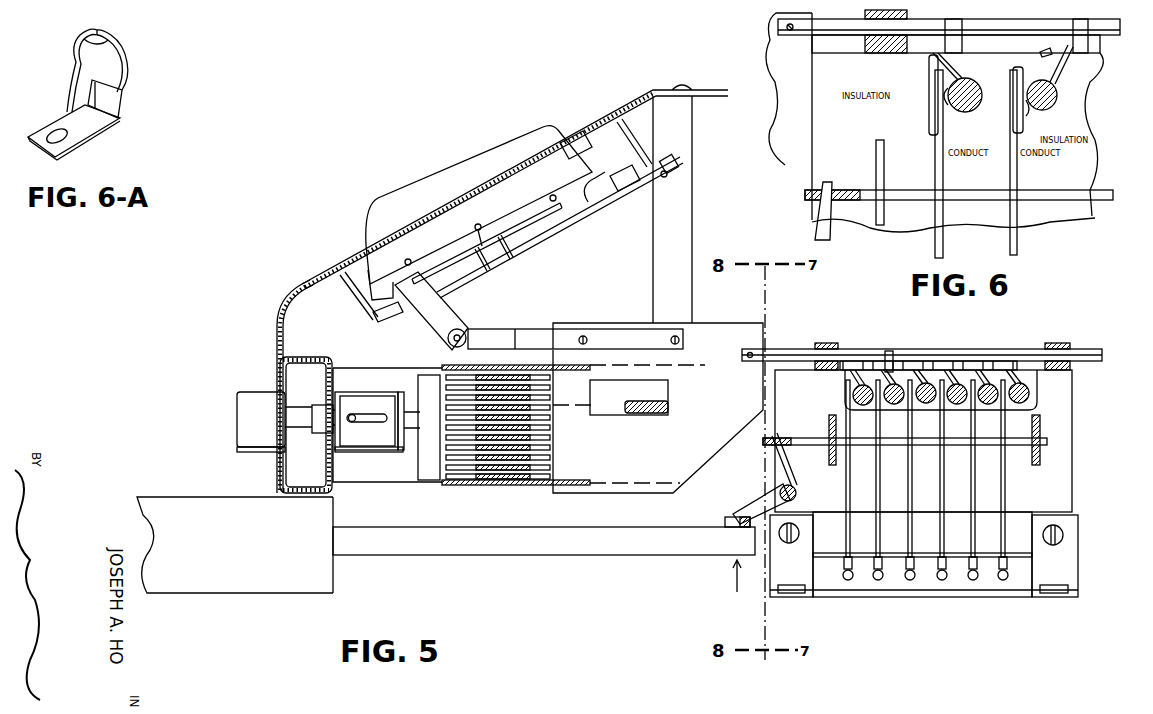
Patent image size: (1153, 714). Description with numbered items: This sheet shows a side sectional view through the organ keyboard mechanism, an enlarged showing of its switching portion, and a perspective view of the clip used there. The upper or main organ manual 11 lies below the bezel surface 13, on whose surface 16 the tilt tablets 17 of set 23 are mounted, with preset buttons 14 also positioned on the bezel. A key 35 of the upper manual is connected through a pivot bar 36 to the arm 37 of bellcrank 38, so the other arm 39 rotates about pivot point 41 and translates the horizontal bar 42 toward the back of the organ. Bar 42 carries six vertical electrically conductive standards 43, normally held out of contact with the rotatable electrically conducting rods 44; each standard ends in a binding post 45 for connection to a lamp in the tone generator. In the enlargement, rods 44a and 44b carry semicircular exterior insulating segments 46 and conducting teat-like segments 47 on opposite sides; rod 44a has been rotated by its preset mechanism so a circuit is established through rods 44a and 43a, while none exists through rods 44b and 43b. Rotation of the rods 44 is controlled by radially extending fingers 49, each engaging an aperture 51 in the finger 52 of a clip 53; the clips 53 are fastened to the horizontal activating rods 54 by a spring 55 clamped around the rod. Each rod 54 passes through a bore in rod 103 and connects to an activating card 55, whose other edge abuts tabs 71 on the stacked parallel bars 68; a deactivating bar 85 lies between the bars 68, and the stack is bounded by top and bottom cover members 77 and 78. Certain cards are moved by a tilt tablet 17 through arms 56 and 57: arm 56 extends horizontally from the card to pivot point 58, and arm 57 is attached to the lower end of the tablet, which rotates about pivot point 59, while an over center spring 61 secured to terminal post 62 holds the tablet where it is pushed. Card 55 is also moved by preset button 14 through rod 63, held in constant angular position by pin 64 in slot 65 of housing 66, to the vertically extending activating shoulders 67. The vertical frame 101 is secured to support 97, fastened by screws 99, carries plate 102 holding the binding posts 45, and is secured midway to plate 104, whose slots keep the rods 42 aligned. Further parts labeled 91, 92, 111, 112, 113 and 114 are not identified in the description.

In FIG. 5, the upper organ manual 11 is at (152, 497).
In FIG. 5, the bezel surface 13 is at (276, 340).
In FIG. 5, the preset push button 14 is at (243, 405).
In FIG. 5, the surface 16 is at (348, 262).
In FIG. 5, the tilt tablet 17 is at (432, 192).
In FIG. 5, the tilt tablet set 23 is at (430, 150).
In FIG. 5, the key 35 is at (207, 515).
In FIG. 5, the pivot bar 36 is at (640, 548).
In FIG. 5, the bellcrank arm 37 is at (747, 514).
In FIG. 5, the bellcrank 38 is at (772, 490).
In FIG. 6, the bellcrank arm 39 is at (826, 190).
In FIG. 5, the bellcrank arm 39 is at (779, 442).
In FIG. 5, the pivot point 41 is at (797, 492).
In FIG. 5, the horizontal bar 42 is at (1040, 445).
In FIG. 5, the electrically conducting standard 43 is at (910, 482).
In FIG. 6, the standard 43a is at (1016, 170).
In FIG. 6, the standard 43b is at (936, 170).
In FIG. 5, the electrically conducting rod 44 is at (853, 396).
In FIG. 6, the electrically conducting rod 44a is at (1045, 105).
In FIG. 6, the electrically conducting rod 44b is at (948, 97).
In FIG. 5, the binding post 45 is at (878, 582).
In FIG. 6, the insulating segment 46 is at (960, 85).
In FIG. 6, the conducting teat-like segment 47 is at (988, 90).
In FIG. 6, the radially extending finger 49 is at (1060, 70).
In FIG. 5, the radially extending finger 49 is at (1025, 367).
In FIG. 6A, the aperture 51 is at (56, 128).
In FIG. 6, the aperture 51 is at (1048, 52).
In FIG. 6A, the clip finger 52 is at (80, 140).
In FIG. 6, the clip finger 52 is at (1100, 70).
In FIG. 6A, the clip 53 is at (122, 108).
In FIG. 6, the clip 53 is at (965, 45).
In FIG. 6, the activating rod 54 is at (1112, 35).
In FIG. 5, the activating rod 54 is at (938, 350).
In FIG. 6A, the activating card 55 is at (62, 52).
In FIG. 6, the activating card 55 is at (783, 112).
In FIG. 5, the activating card 55 is at (762, 327).
In FIG. 5, the arm 56 is at (528, 329).
In FIG. 5, the arm 57 is at (432, 342).
In FIG. 5, the pivot pin 58 is at (459, 329).
In FIG. 5, the pivot point 59 is at (479, 224).
In FIG. 5, the over center spring 61 is at (597, 210).
In FIG. 5, the terminal post 62 is at (634, 188).
In FIG. 5, the rod 63 is at (300, 413).
In FIG. 5, the pin 64 is at (355, 414).
In FIG. 5, the slot 65 is at (383, 426).
In FIG. 5, the housing 66 is at (352, 450).
In FIG. 5, the activating shoulder 67 is at (428, 480).
In FIG. 5, the activating bar 68 is at (470, 481).
In FIG. 5, the tab 71 is at (538, 481).
In FIG. 5, the top cover member 77 is at (478, 365).
In FIG. 5, the bottom cover member 78 is at (500, 485).
In FIG. 5, the deactivating bar 85 is at (553, 407).
In FIG. 5, the contact element 91 is at (668, 410).
In FIG. 5, the switch block 92 is at (668, 384).
In FIG. 5, the support 97 is at (1076, 565).
In FIG. 5, the screw 99 is at (1079, 590).
In FIG. 5, the frame 101 is at (1072, 462).
In FIG. 5, the plate 102 is at (830, 558).
In FIG. 6, the rod 103 is at (862, 42).
In FIG. 5, the rod 103 is at (822, 343).
In FIG. 5, the plate 104 is at (829, 420).
In FIG. 5, the pin 111 is at (407, 259).
In FIG. 5, the pin 112 is at (552, 195).
In FIG. 5, the lower rail 113 is at (472, 262).
In FIG. 5, the upper rail 114 is at (508, 242).